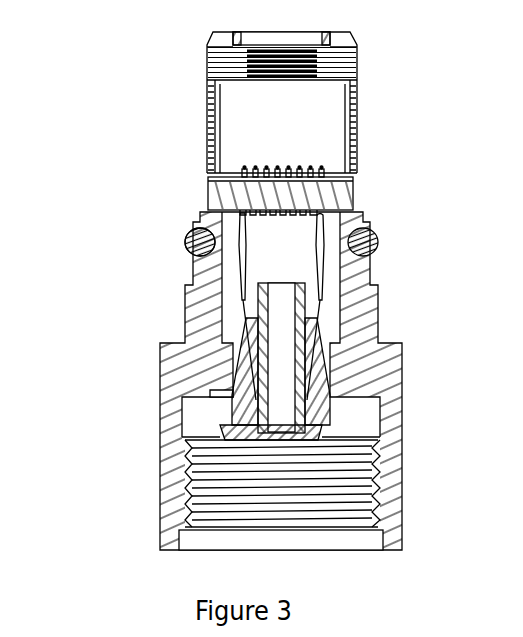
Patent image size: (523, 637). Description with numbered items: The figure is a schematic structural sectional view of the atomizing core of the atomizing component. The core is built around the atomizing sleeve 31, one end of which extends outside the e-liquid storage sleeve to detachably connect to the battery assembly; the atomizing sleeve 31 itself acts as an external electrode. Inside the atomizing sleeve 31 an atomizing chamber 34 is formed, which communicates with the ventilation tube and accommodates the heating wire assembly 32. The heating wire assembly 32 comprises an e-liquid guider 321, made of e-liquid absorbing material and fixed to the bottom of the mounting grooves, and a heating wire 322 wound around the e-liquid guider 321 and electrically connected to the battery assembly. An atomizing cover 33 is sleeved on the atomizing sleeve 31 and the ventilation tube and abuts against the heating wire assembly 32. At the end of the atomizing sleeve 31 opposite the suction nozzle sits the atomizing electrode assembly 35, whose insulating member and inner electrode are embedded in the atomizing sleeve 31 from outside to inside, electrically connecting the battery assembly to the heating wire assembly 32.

The atomizing sleeve 31 is at (175, 447).
The heating wire assembly 32 is at (187, 187).
The e-liquid guider 321 is at (227, 193).
The heating wire 322 is at (240, 170).
The atomizing cover 33 is at (207, 60).
The atomizing chamber 34 is at (297, 248).
The atomizing electrode assembly 35 is at (330, 413).